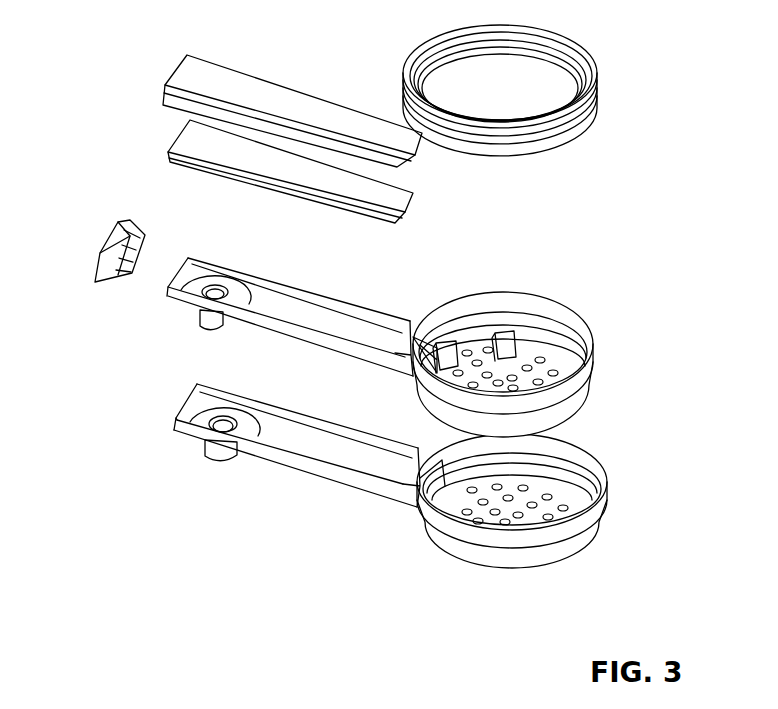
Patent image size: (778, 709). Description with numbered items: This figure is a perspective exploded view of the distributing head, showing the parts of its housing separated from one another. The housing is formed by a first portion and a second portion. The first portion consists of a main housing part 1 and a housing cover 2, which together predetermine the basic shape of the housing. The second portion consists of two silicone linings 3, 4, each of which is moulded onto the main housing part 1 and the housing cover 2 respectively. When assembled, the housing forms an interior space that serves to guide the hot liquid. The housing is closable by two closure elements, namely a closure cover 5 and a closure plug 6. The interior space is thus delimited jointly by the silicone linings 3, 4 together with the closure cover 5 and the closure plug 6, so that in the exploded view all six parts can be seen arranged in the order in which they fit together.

The main housing part 1 is at (637, 487).
The housing cover 2 is at (157, 61).
The silicone lining 3 is at (614, 330).
The silicone lining 4 is at (145, 135).
The closure cover 5 is at (611, 59).
The closure plug 6 is at (87, 246).